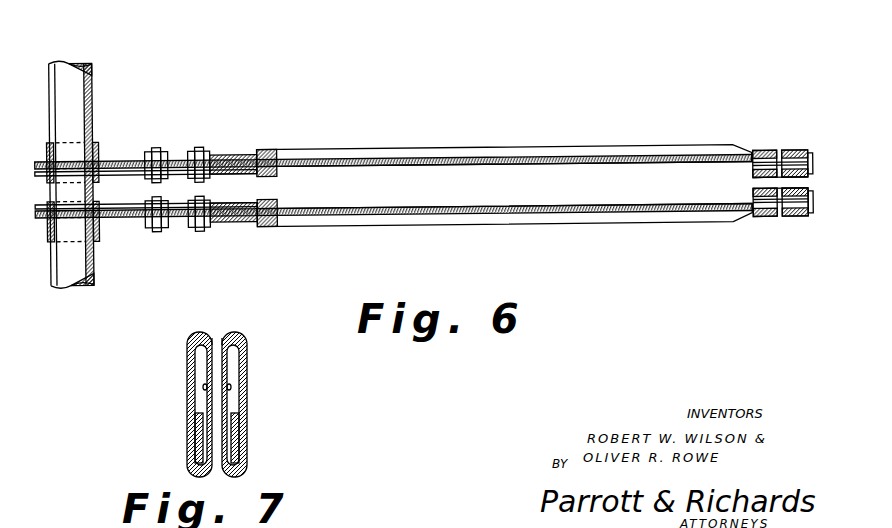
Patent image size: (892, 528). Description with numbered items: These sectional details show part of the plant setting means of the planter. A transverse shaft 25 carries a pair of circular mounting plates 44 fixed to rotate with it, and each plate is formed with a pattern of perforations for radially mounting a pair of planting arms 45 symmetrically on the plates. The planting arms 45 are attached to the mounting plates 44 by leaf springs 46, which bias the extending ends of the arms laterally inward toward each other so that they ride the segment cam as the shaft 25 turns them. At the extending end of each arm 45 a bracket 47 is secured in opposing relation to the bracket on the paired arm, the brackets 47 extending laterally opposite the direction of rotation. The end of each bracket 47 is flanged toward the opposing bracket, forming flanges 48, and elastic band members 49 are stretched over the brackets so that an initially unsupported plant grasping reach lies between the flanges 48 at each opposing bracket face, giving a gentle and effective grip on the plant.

In FIG. 6, the transverse shaft 25 is at (93, 73).
In FIG. 6, the circular mounting plates 44 is at (107, 163).
In FIG. 6, the planting arms 45 is at (508, 153).
In FIG. 7, the planting arms 45 is at (200, 437).
In FIG. 6, the leaf springs 46 is at (225, 158).
In FIG. 6, the brackets 47 is at (752, 182).
In FIG. 7, the brackets 47 is at (200, 387).
In FIG. 7, the flanges 48 is at (195, 349).
In FIG. 6, the elastic band members 49 is at (792, 226).
In FIG. 7, the elastic band members 49 is at (218, 342).